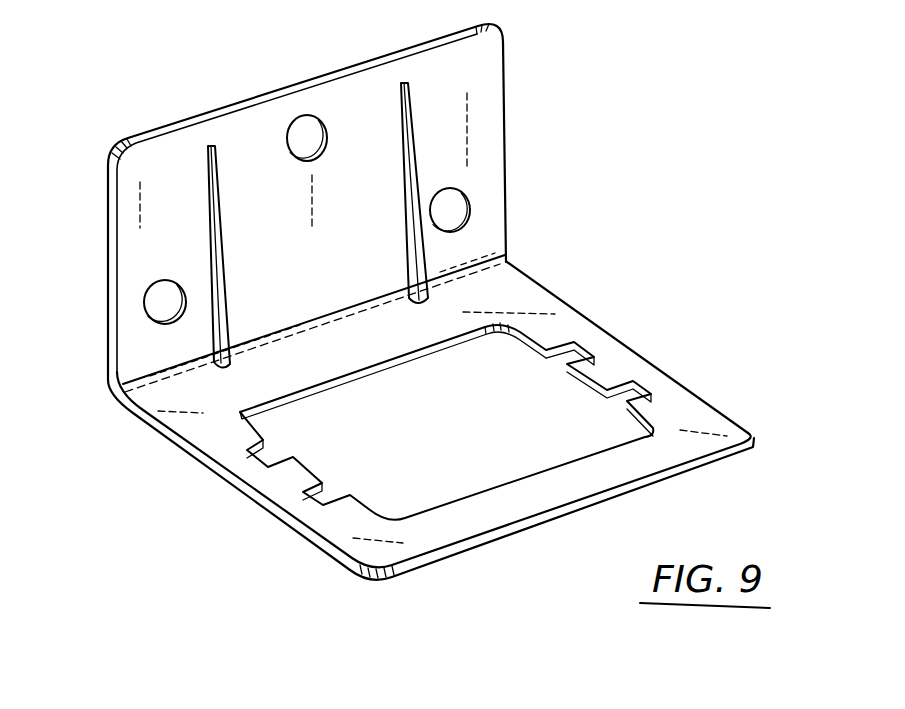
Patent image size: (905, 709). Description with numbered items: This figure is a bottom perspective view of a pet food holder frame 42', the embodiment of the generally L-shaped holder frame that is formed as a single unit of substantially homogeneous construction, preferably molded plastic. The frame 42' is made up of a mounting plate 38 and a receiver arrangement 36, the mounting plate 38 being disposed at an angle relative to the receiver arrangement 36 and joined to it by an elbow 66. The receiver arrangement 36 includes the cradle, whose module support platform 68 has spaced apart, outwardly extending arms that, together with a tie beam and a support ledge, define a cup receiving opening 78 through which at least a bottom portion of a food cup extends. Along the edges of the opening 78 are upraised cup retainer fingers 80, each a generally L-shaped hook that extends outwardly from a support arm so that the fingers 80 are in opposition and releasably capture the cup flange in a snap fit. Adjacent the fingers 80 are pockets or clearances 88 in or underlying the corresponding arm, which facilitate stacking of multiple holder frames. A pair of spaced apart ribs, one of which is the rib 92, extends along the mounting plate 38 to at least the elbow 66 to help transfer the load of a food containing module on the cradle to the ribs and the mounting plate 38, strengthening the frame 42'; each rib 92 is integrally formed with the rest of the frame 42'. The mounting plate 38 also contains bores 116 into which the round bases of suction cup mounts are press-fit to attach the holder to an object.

The receiver arrangement 36 is at (226, 514).
The mounting plate 38 is at (104, 277).
The holder frame 42' is at (382, 319).
The elbow 66 is at (498, 266).
The module support platform 68 is at (615, 330).
The cup receiving opening 78 is at (484, 466).
The cup retainer finger 80 is at (609, 400).
The pocket or clearance 88 is at (285, 447).
The rib 92 is at (217, 212).
The bore 116 is at (318, 117).